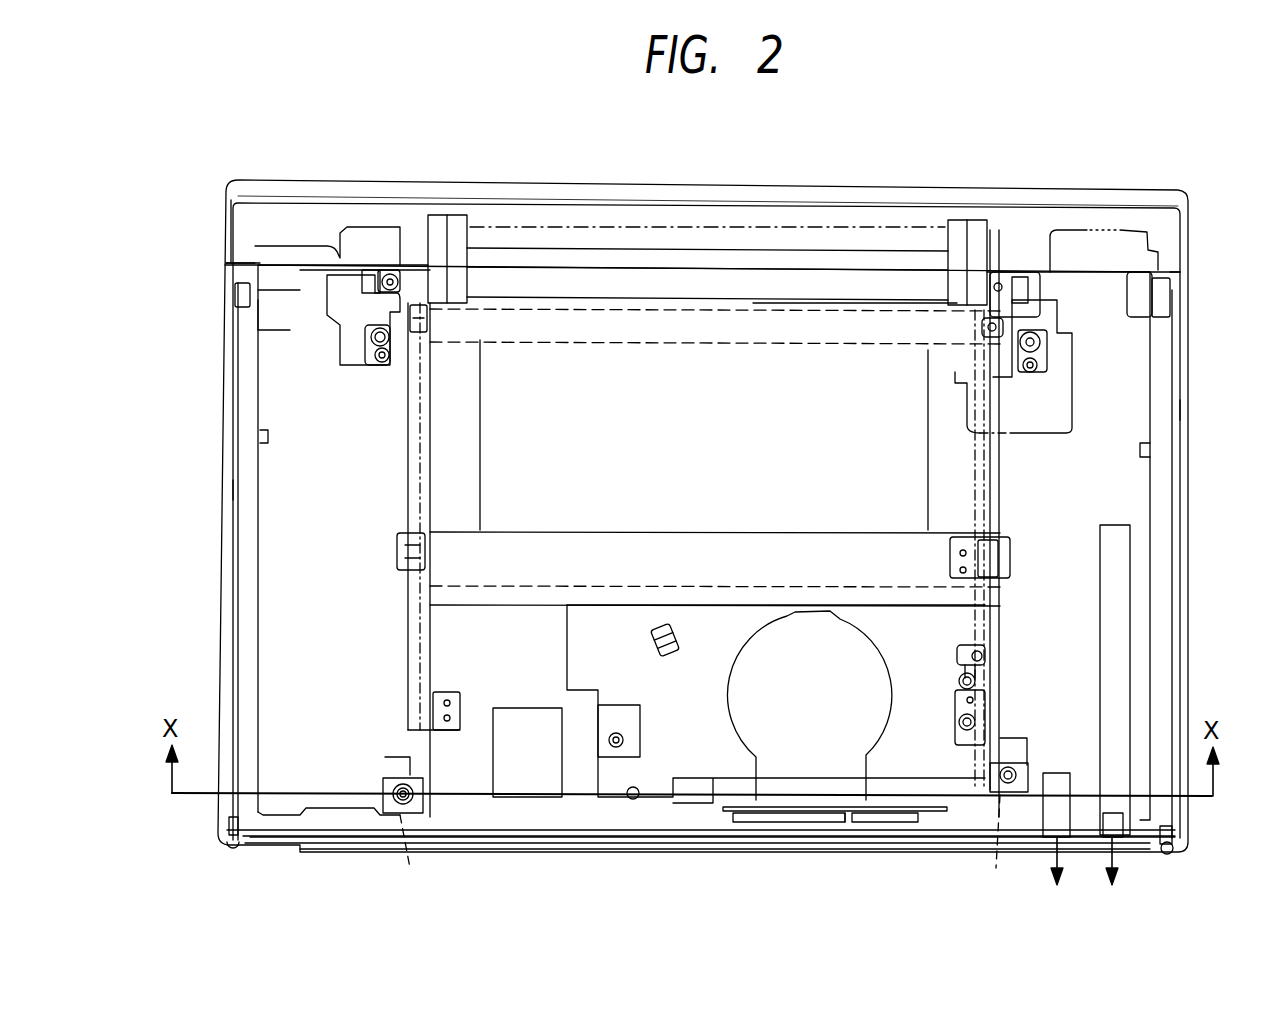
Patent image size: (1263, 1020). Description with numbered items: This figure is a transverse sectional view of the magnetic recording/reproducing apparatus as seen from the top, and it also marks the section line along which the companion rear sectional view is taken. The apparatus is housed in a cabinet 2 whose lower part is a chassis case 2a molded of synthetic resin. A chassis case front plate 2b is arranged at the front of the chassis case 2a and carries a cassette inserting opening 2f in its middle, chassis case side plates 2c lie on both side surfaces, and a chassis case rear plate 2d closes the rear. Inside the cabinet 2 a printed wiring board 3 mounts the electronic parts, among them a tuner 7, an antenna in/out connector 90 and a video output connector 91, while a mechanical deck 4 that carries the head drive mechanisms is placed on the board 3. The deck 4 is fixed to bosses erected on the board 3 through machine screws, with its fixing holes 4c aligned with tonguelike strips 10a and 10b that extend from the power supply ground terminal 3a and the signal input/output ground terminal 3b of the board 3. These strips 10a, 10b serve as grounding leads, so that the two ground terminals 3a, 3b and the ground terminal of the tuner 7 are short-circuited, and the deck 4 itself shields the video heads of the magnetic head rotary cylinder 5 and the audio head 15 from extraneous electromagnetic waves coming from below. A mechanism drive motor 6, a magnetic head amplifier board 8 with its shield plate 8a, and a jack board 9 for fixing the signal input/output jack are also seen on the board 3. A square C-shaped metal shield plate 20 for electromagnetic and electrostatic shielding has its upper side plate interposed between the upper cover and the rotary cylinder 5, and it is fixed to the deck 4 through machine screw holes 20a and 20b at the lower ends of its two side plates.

The cabinet 2 is at (1043, 174).
The chassis case 2a is at (214, 276).
The chassis case front plate 2b is at (775, 178).
The chassis case side plates 2c is at (232, 487).
The chassis case rear plate 2d is at (574, 860).
The cassette inserting opening 2f is at (574, 170).
The printed wiring board 3 is at (1130, 479).
The power supply ground terminal 3a is at (414, 857).
The signal input/output ground terminal 3b is at (1001, 847).
The mechanical deck 4 is at (462, 776).
The fixing holes 4c is at (374, 776).
The magnetic head rotary cylinder 5 is at (878, 680).
The mechanism drive motor 6 is at (516, 715).
The tuner 7 is at (1100, 565).
The magnetic head amplifier board 8 is at (783, 822).
The shield plate for the magnetic head amplifier board 8a is at (810, 822).
The jack board 9 is at (876, 822).
The tonguelike strip 10a is at (395, 758).
The tonguelike strip 10b is at (1003, 740).
The audio head 15 is at (655, 642).
The shield plate 20 is at (572, 628).
The machine screw hole 20a is at (640, 718).
The machine screw hole 20b is at (963, 735).
The antenna in/out connector 90 is at (1123, 835).
The video output connector 91 is at (1052, 870).